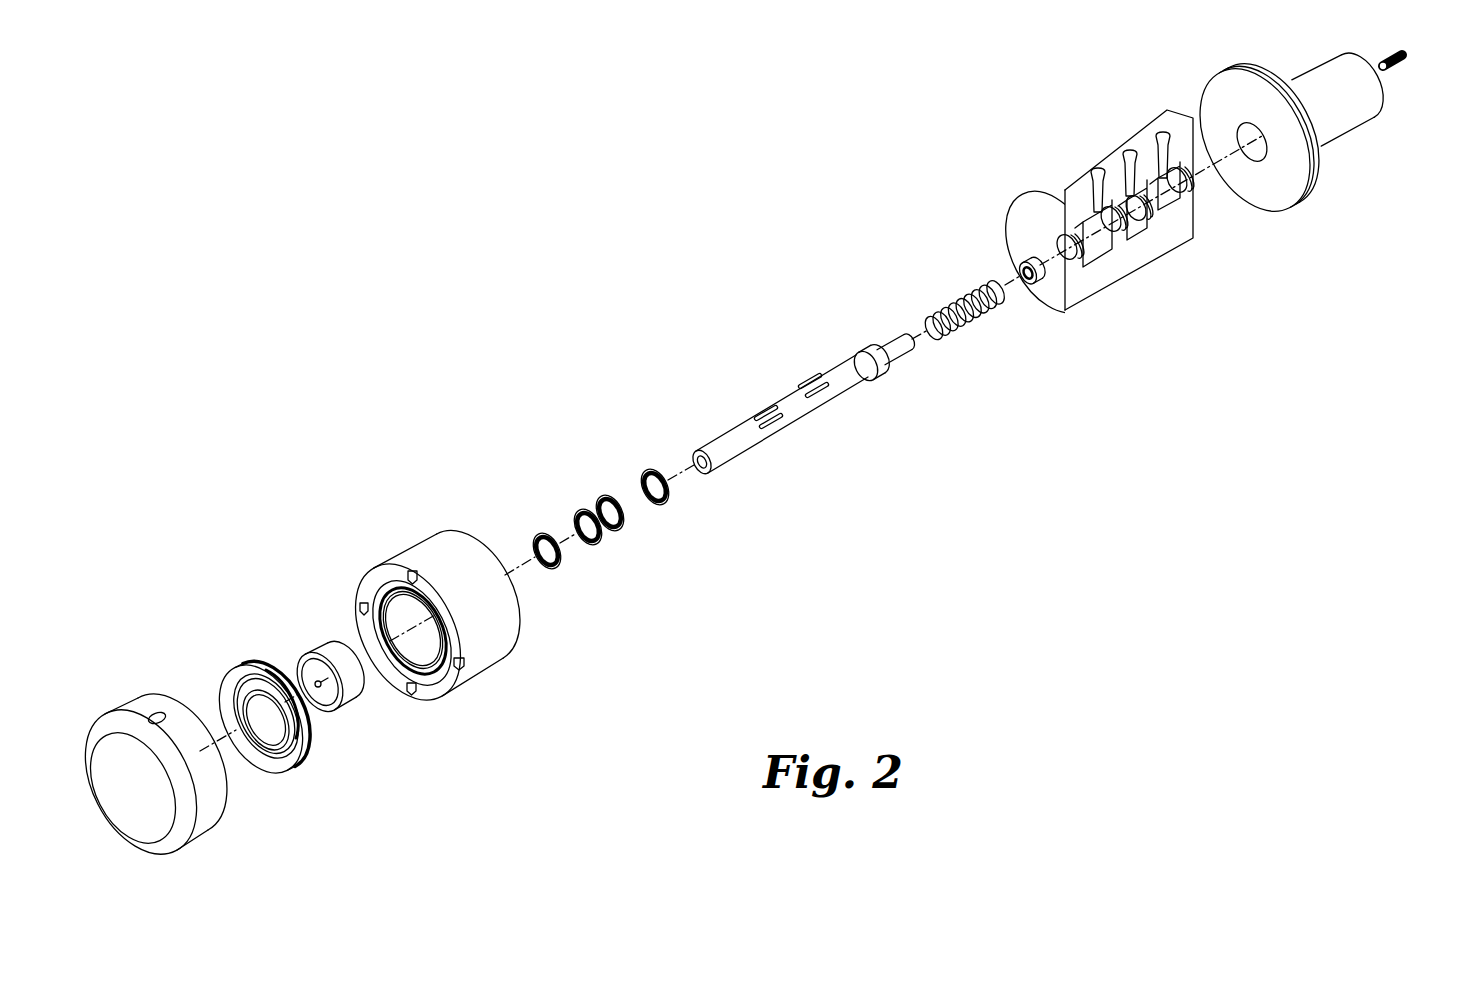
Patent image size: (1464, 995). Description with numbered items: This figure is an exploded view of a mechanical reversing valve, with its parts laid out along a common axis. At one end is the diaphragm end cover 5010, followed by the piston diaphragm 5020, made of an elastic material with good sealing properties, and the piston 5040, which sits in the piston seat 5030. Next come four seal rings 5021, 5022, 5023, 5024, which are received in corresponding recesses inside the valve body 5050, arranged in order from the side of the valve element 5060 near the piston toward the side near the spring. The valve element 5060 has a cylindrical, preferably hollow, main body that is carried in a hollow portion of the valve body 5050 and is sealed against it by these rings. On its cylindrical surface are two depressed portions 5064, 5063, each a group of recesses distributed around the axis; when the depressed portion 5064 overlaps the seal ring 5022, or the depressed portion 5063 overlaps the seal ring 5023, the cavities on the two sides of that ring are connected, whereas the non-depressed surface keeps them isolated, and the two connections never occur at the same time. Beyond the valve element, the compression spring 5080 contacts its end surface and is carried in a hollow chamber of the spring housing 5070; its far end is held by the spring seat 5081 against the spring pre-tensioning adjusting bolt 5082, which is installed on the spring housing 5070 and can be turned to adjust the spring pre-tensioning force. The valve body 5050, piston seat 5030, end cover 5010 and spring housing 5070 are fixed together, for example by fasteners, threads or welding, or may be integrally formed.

The diaphragm end cover 5010 is at (122, 718).
The piston diaphragm 5020 is at (248, 677).
The piston 5040 is at (337, 648).
The piston seat 5030 is at (435, 577).
The seal ring 5021 is at (549, 570).
The seal ring 5022 is at (597, 546).
The seal ring 5023 is at (597, 503).
The seal ring 5024 is at (648, 468).
The valve element 5060 is at (806, 412).
The depressed portion 5063 is at (820, 395).
The depressed portion 5064 is at (770, 435).
The compression spring 5080 is at (952, 303).
The spring seat 5081 is at (1034, 285).
The valve body 5050 is at (1037, 203).
The spring housing 5070 is at (1283, 168).
The spring pre-tensioning adjusting bolt 5082 is at (1393, 73).